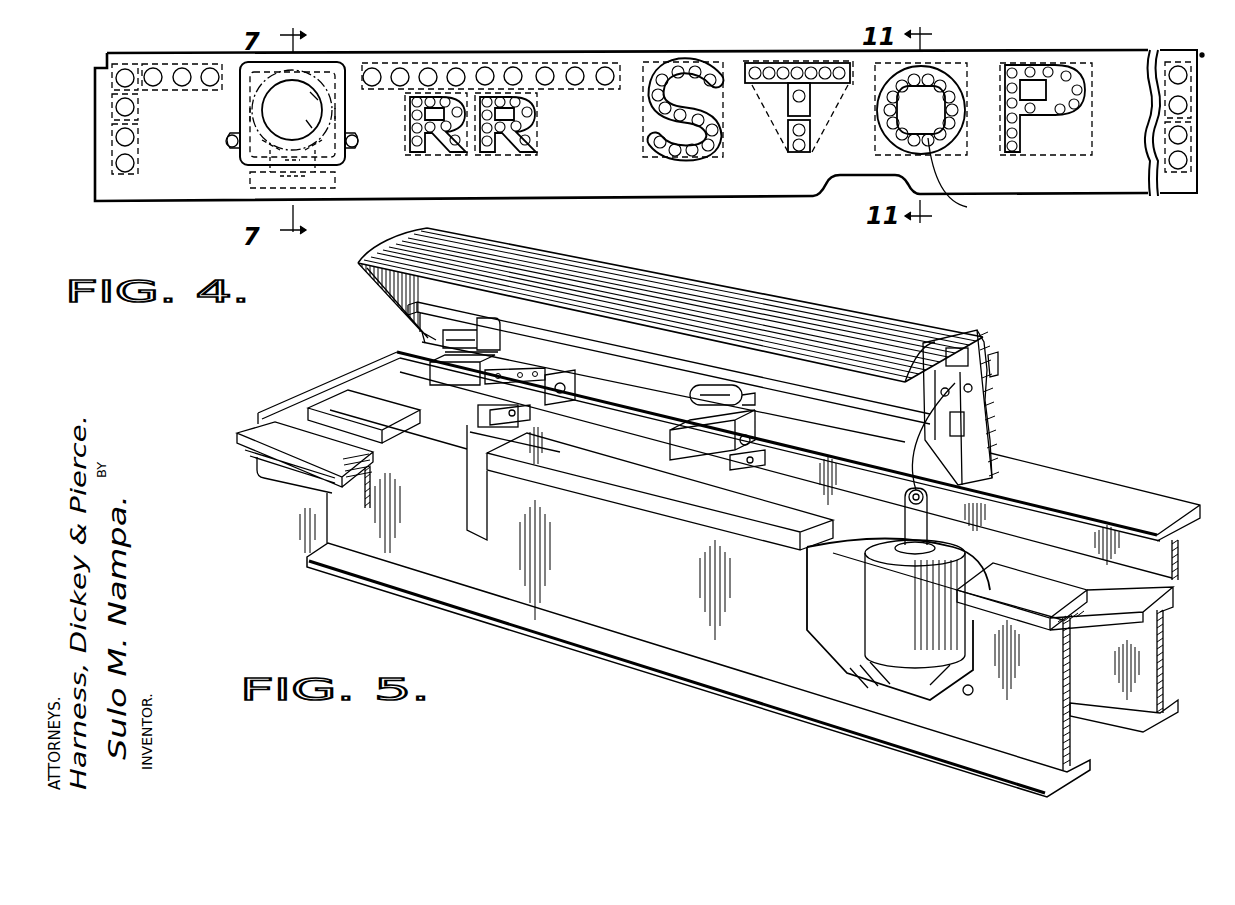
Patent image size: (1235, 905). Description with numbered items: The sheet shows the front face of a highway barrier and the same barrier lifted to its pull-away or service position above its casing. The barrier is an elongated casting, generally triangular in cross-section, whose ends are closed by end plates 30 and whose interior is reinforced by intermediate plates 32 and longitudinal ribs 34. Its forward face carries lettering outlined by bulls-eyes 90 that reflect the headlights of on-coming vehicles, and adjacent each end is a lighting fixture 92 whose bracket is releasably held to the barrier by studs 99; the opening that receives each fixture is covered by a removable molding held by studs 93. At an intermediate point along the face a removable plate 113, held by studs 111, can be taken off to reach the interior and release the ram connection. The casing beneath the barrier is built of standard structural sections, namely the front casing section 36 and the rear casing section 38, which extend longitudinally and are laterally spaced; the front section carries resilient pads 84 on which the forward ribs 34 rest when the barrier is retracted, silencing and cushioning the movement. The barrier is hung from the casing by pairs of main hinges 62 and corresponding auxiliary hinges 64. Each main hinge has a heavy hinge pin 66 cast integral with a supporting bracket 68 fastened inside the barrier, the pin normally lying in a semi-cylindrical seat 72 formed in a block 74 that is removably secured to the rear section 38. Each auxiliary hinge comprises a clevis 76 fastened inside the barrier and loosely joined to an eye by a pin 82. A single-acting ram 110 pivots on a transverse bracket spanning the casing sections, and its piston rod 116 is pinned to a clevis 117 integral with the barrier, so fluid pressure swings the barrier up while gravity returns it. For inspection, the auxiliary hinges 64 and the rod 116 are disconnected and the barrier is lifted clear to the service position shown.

In FIG. 5, the end plate 30 is at (398, 305).
In FIG. 5, the intermediate plate 32 is at (729, 466).
In FIG. 5, the longitudinal rib 34 is at (920, 350).
In FIG. 5, the front casing section 36 is at (719, 603).
In FIG. 5, the rear casing section 38 is at (1163, 627).
In FIG. 5, the main hinge 62 is at (500, 345).
In FIG. 5, the auxiliary hinge 64 is at (549, 384).
In FIG. 5, the hinge pin 66 is at (535, 295).
In FIG. 5, the supporting bracket 68 is at (470, 322).
In FIG. 5, the semi-cylindrical seat 72 is at (405, 362).
In FIG. 5, the block 74 is at (418, 389).
In FIG. 5, the clevis 76 is at (515, 388).
In FIG. 5, the pin 82 is at (478, 410).
In FIG. 5, the pad 84 is at (1060, 588).
In FIG. 4, the bulls-eye 90 is at (413, 143).
In FIG. 4, the lighting fixture 92 is at (266, 111).
In FIG. 4, the stud 93 is at (228, 144).
In FIG. 4, the stud 99 is at (326, 80).
In FIG. 5, the ram 110 is at (895, 608).
In FIG. 4, the stud 111 is at (882, 117).
In FIG. 4, the removable plate 113 is at (966, 179).
In FIG. 5, the piston rod 116 is at (907, 500).
In FIG. 5, the clevis 117 is at (996, 364).